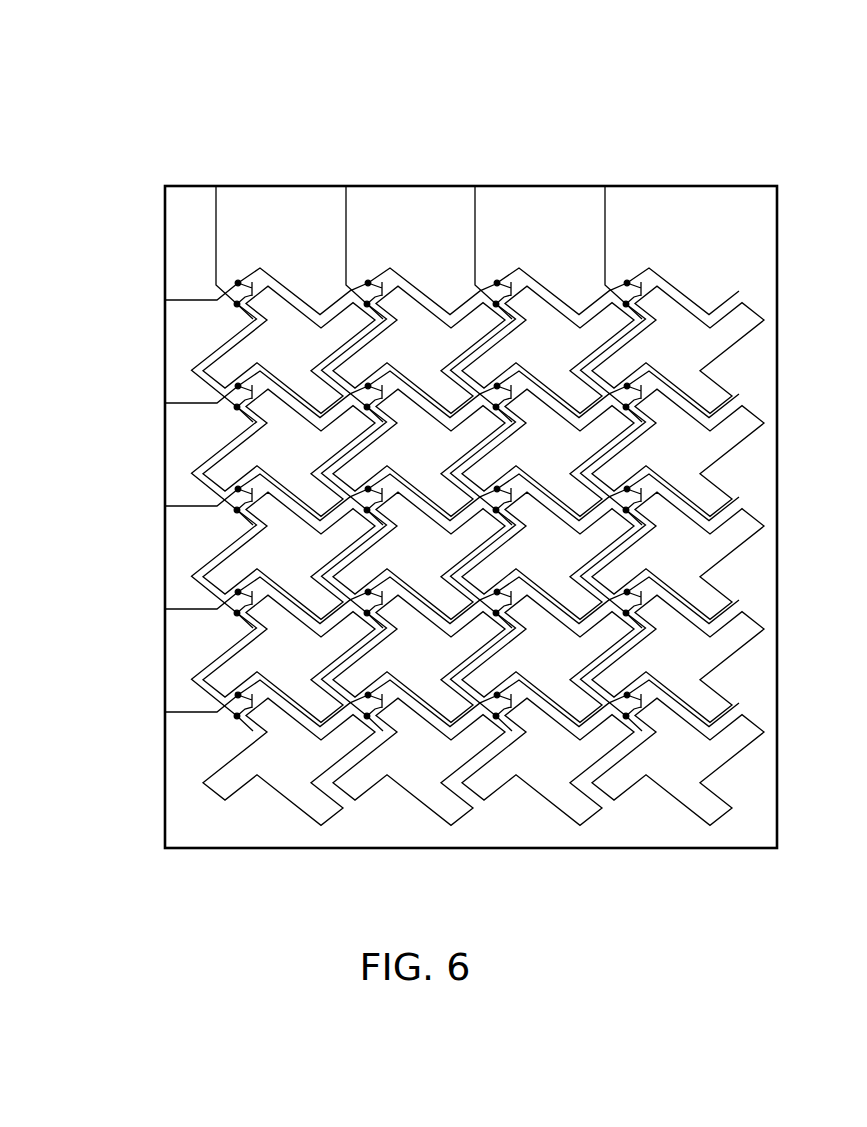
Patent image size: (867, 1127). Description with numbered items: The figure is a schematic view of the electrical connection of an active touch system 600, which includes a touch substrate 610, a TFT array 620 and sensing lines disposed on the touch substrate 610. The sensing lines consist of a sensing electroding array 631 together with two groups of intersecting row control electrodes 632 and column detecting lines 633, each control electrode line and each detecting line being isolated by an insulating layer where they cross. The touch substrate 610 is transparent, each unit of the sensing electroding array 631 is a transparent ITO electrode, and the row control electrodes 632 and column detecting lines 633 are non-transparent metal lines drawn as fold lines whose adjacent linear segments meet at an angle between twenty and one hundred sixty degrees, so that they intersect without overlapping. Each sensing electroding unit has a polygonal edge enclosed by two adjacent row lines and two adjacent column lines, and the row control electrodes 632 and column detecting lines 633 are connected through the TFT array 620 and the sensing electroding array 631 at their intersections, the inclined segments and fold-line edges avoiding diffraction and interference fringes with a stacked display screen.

The active touch system 600 is at (397, 458).
The touch substrate 610 is at (164, 850).
The TFT array 620 is at (237, 705).
The sensing electroding array 631 is at (287, 799).
The row control electrodes 632 is at (158, 710).
The column detecting lines 633 is at (604, 182).